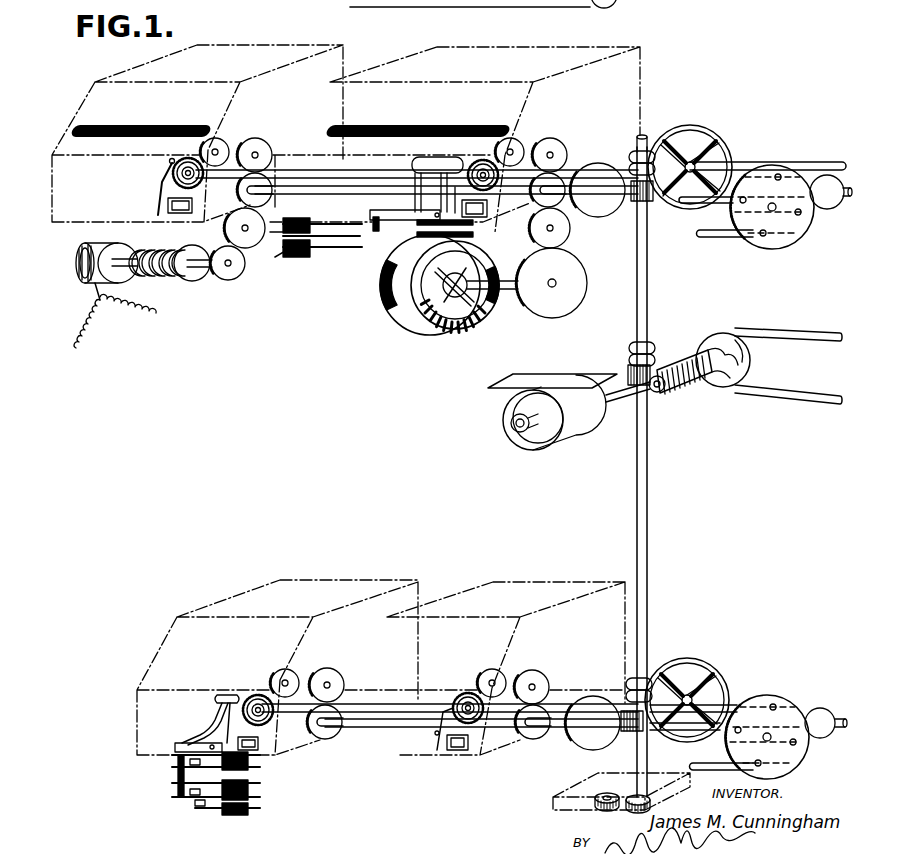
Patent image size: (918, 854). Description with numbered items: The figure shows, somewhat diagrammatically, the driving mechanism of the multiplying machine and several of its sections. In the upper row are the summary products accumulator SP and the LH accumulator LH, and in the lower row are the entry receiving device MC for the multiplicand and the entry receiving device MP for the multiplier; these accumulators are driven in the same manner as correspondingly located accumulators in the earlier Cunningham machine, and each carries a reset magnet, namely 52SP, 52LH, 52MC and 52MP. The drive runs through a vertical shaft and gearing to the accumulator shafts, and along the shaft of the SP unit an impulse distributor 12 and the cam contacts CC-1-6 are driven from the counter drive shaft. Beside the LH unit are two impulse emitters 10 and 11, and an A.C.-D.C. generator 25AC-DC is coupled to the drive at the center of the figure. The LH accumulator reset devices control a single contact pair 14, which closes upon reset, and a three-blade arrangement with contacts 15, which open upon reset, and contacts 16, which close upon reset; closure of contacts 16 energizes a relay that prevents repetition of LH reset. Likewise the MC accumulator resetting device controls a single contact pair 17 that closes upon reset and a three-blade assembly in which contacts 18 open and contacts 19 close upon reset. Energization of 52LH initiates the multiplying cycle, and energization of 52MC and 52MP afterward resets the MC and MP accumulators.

The summary products accumulator SP is at (271, 133).
The LH accumulator LH is at (455, 139).
The entry receiving device for the multiplicand MC is at (381, 667).
The entry receiving device for the multiplier MP is at (506, 668).
The impulse distributor 12 is at (78, 278).
The cam contacts CC-1 to CC-6 CC-1-6 is at (142, 278).
The SP reset magnet 52SP is at (183, 212).
The 52LH reset magnet 52LH is at (483, 213).
The 52MC reset magnet 52MC is at (258, 750).
The 52MP reset magnet 52MP is at (458, 750).
The contacts 15 is at (365, 225).
The reset contacts 16 is at (362, 252).
The single contact pair 14 is at (397, 227).
The impulse emitter 10 is at (462, 330).
The impulse emitter 11 is at (403, 322).
The A.C.-D.C. generator 25AC-DC is at (583, 427).
The single contact pair 17 is at (177, 767).
The contacts 18 is at (190, 800).
The contacts 19 is at (203, 810).